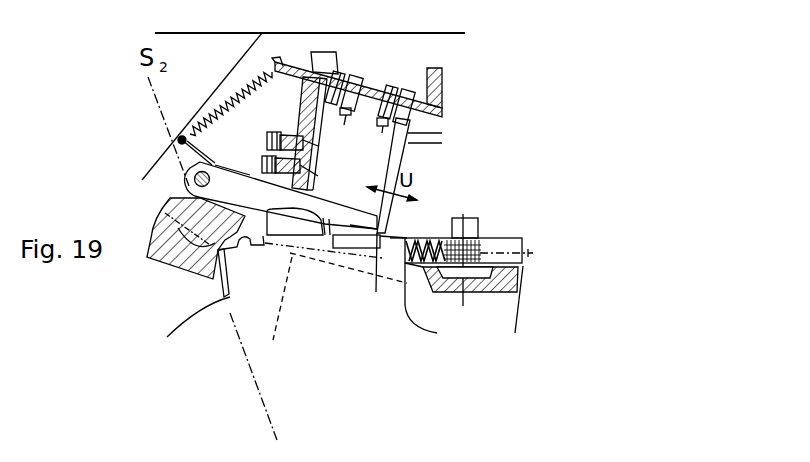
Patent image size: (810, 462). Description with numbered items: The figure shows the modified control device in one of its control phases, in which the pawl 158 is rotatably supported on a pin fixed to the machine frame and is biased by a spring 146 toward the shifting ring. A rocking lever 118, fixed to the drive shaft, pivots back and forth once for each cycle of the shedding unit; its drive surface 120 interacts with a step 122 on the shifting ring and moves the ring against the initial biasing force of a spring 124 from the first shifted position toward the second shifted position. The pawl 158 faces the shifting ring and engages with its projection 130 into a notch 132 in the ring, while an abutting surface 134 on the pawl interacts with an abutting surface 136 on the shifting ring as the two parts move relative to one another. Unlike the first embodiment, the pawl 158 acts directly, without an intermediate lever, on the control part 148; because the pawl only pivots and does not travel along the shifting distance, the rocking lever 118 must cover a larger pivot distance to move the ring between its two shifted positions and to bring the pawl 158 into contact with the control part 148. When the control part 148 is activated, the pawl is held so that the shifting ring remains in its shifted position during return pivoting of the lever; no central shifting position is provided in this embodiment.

The rocking lever 118 is at (168, 262).
The drive surface 120 is at (228, 265).
The step 122 is at (227, 293).
The spring 124 is at (440, 238).
The projection 130 is at (390, 214).
The notch 132 is at (382, 218).
The abutting surface 134 is at (322, 222).
The abutting surface 136 is at (322, 237).
The spring 146 is at (277, 150).
The control part 148 is at (366, 168).
The pawl 158 is at (352, 121).